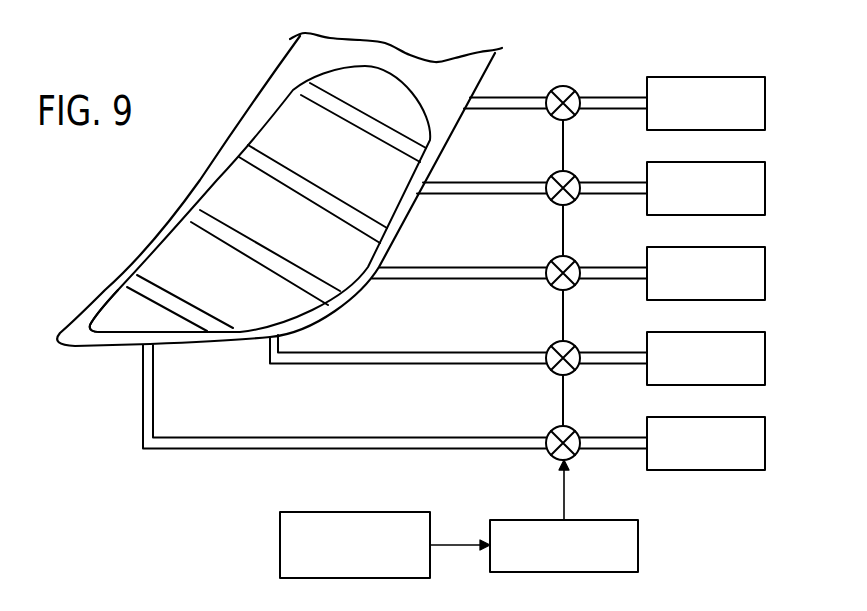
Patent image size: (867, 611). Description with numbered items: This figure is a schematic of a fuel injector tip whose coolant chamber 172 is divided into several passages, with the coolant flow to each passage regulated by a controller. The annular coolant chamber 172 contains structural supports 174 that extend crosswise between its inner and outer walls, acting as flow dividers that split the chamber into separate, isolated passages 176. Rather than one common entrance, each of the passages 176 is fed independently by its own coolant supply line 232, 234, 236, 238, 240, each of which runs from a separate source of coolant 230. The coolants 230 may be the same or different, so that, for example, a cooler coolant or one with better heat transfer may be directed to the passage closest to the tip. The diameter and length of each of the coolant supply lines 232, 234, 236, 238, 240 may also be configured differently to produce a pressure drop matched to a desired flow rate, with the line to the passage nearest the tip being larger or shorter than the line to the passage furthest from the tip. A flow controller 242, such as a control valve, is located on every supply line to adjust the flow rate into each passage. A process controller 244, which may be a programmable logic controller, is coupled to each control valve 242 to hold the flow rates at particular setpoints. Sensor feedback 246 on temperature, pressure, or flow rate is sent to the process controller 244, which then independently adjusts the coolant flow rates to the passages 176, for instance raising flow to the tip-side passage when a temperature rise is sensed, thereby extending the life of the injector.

The coolant chamber 172 is at (211, 84).
The structural supports 174 is at (148, 290).
The passages 176 is at (118, 315).
The coolants 230 is at (703, 470).
The coolant supply line 232 is at (472, 451).
The coolant supply line 234 is at (470, 366).
The coolant supply line 236 is at (470, 281).
The coolant supply line 238 is at (488, 195).
The coolant supply line 240 is at (503, 110).
The flow controller 242 is at (580, 452).
The process controller 244 is at (640, 545).
The sensor feedback 246 is at (280, 543).